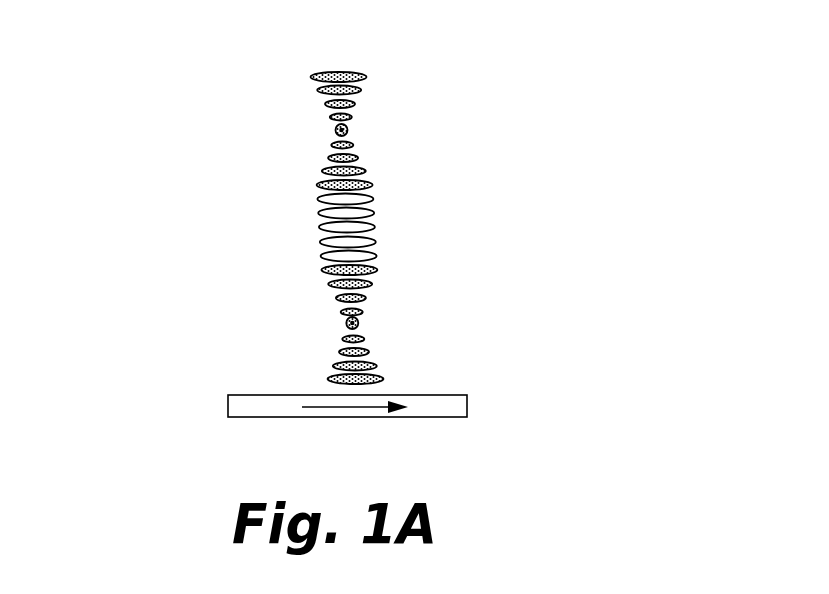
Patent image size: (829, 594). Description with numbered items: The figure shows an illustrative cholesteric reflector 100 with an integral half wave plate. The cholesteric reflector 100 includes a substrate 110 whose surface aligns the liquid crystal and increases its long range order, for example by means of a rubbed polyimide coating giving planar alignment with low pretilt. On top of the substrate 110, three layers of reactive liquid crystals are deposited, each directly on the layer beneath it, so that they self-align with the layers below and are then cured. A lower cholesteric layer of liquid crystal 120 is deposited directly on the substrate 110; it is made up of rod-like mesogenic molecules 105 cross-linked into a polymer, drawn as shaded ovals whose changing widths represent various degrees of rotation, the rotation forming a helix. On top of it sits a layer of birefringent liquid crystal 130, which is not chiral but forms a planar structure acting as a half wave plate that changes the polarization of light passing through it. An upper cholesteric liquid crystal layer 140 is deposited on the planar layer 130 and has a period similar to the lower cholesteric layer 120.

The cholesteric reflector 100 is at (136, 60).
The rod-like mesogenic molecules 105 is at (375, 271).
The substrate 110 is at (438, 395).
The lower cholesteric layer of liquid crystal 120 is at (300, 262).
The layer of birefringent liquid crystal 130 is at (300, 190).
The upper cholesteric liquid crystal layer 140 is at (300, 73).